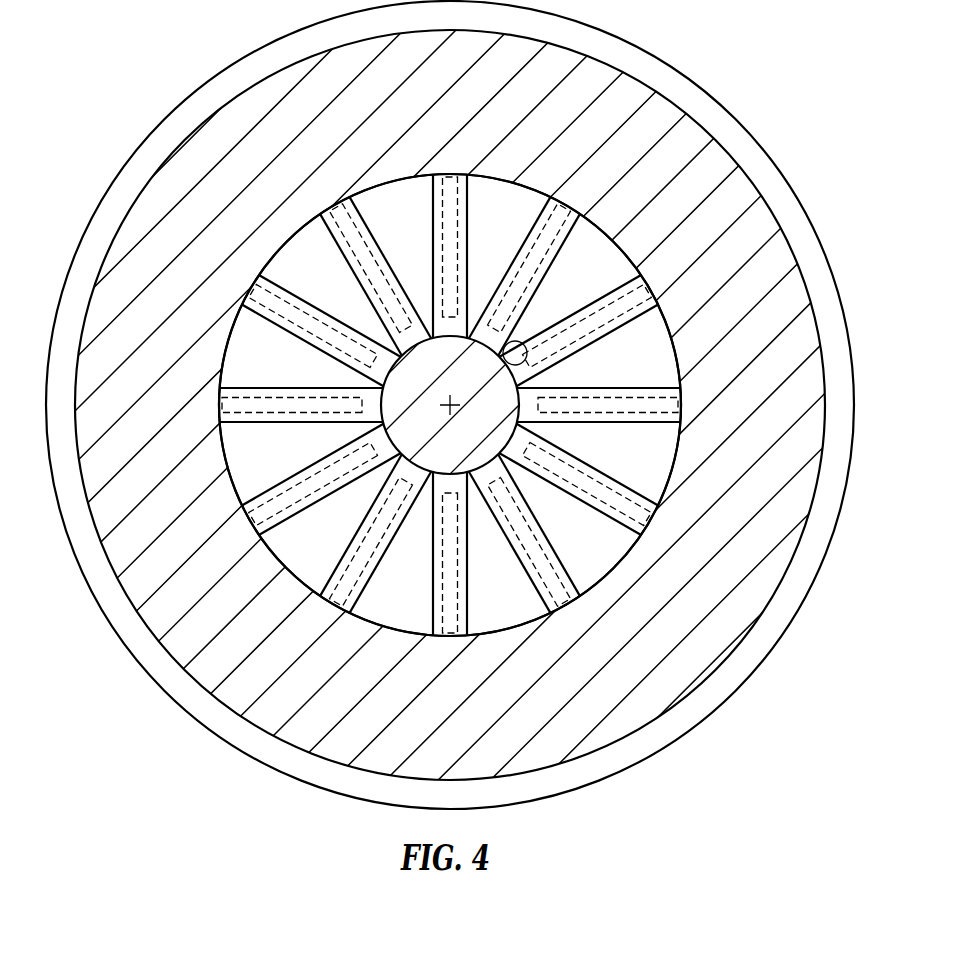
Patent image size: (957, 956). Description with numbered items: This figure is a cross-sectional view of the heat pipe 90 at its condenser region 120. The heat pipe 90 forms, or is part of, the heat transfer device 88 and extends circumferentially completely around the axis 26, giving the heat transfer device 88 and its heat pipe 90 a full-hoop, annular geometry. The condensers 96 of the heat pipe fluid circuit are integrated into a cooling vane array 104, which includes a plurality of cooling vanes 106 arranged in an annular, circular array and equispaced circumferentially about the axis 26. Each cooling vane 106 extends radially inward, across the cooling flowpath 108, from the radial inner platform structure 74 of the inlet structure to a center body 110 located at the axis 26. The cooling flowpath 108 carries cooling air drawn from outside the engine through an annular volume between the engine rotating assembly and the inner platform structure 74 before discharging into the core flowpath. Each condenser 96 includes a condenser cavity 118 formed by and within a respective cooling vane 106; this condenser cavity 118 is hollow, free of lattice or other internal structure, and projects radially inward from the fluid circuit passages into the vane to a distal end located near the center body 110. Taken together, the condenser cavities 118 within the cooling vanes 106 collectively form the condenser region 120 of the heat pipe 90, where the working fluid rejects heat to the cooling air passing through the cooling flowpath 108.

The radial inner platform structure 74 is at (686, 61).
The heat transfer device 88 is at (478, 478).
The heat pipe 90 is at (805, 242).
The cooling vane array 104 is at (596, 208).
The cooling vanes 106 is at (433, 227).
The condensers 96 is at (445, 405).
The condenser cavity 118 is at (526, 238).
The cooling flowpath 108 is at (307, 377).
The axis 26 is at (477, 338).
The center body 110 is at (519, 401).
The condenser region 120 is at (240, 528).